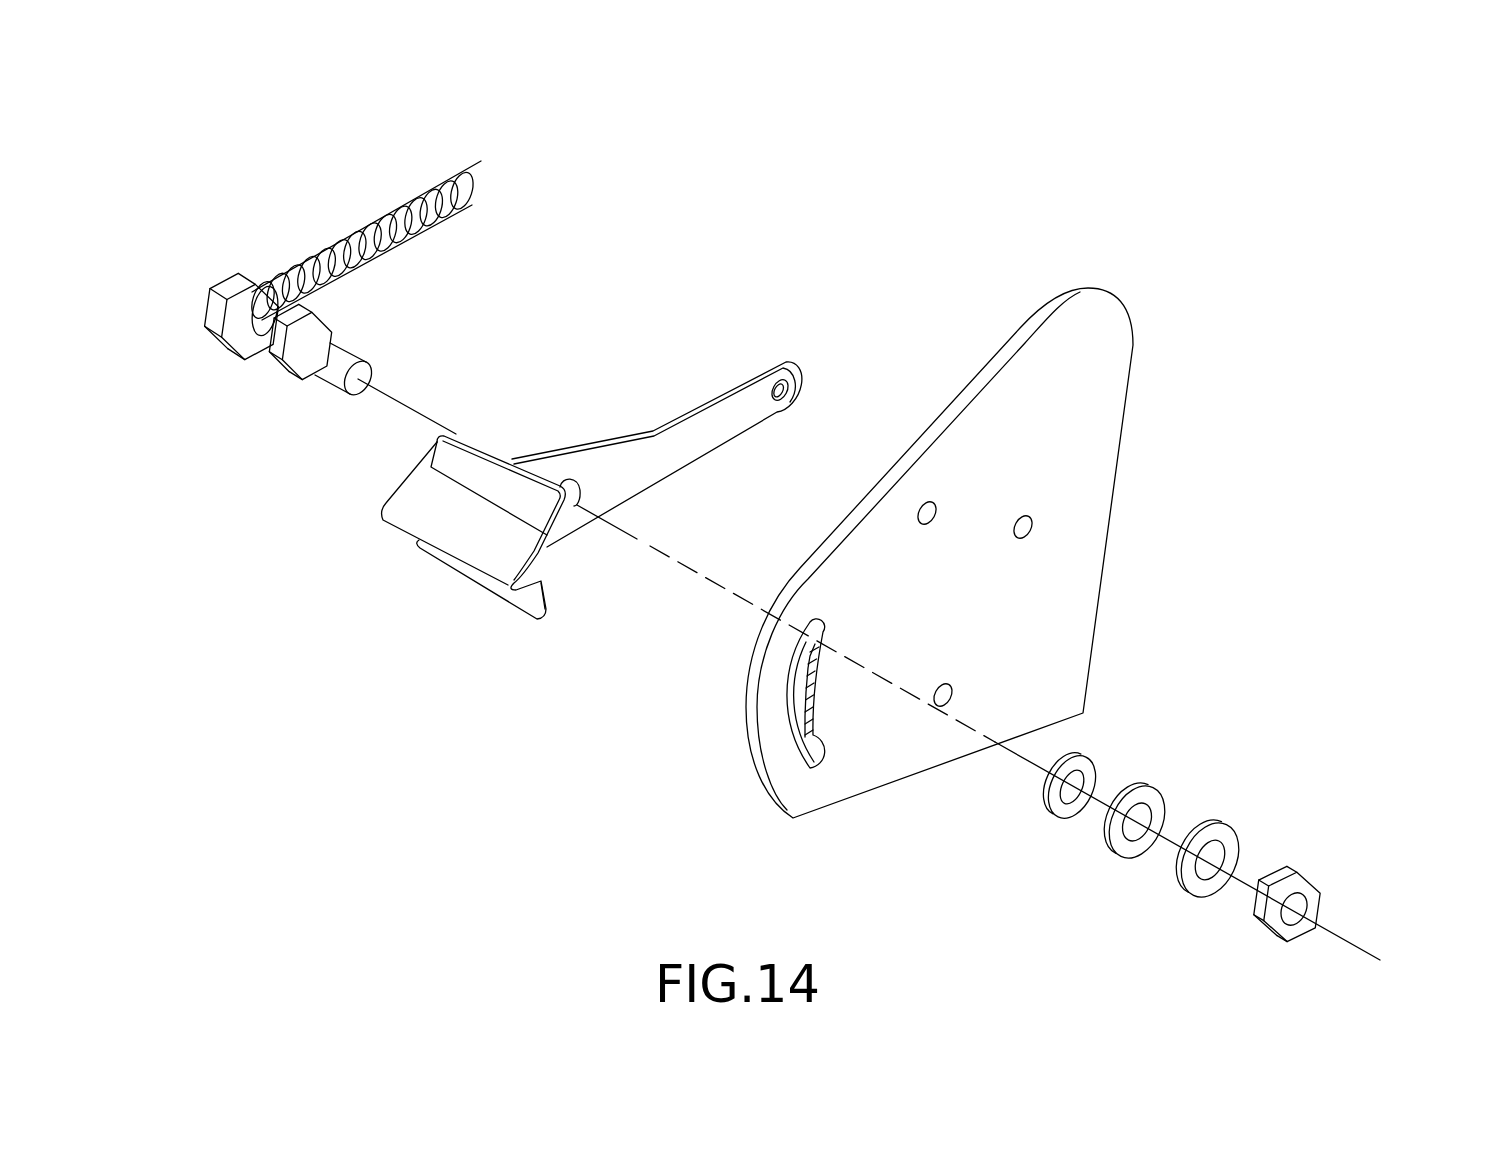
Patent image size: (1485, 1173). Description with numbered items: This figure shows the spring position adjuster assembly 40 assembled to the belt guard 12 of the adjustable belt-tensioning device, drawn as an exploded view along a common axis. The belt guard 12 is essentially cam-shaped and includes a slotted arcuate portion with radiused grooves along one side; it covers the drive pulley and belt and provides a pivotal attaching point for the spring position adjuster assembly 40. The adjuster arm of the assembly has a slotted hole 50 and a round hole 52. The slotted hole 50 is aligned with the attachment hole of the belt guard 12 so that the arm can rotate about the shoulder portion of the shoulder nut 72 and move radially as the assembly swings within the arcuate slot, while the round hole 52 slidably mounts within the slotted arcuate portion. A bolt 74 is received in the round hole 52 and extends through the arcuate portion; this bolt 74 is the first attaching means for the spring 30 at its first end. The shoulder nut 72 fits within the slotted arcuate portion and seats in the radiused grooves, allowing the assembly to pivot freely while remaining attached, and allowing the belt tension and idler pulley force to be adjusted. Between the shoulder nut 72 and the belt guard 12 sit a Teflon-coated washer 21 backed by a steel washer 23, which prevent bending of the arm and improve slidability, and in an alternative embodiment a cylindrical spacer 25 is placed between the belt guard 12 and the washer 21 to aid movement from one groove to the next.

The belt guard 12 is at (1086, 289).
The washer 21 is at (1150, 782).
The steel washer 23 is at (1225, 825).
The cylindrical spacer 25 is at (1080, 753).
The spring 30 is at (396, 207).
The spring position adjuster assembly 40 is at (706, 417).
The slotted hole 50 is at (798, 378).
The round hole 52 is at (577, 507).
The shoulder nut 72 is at (1303, 880).
The bolt 74 is at (295, 382).